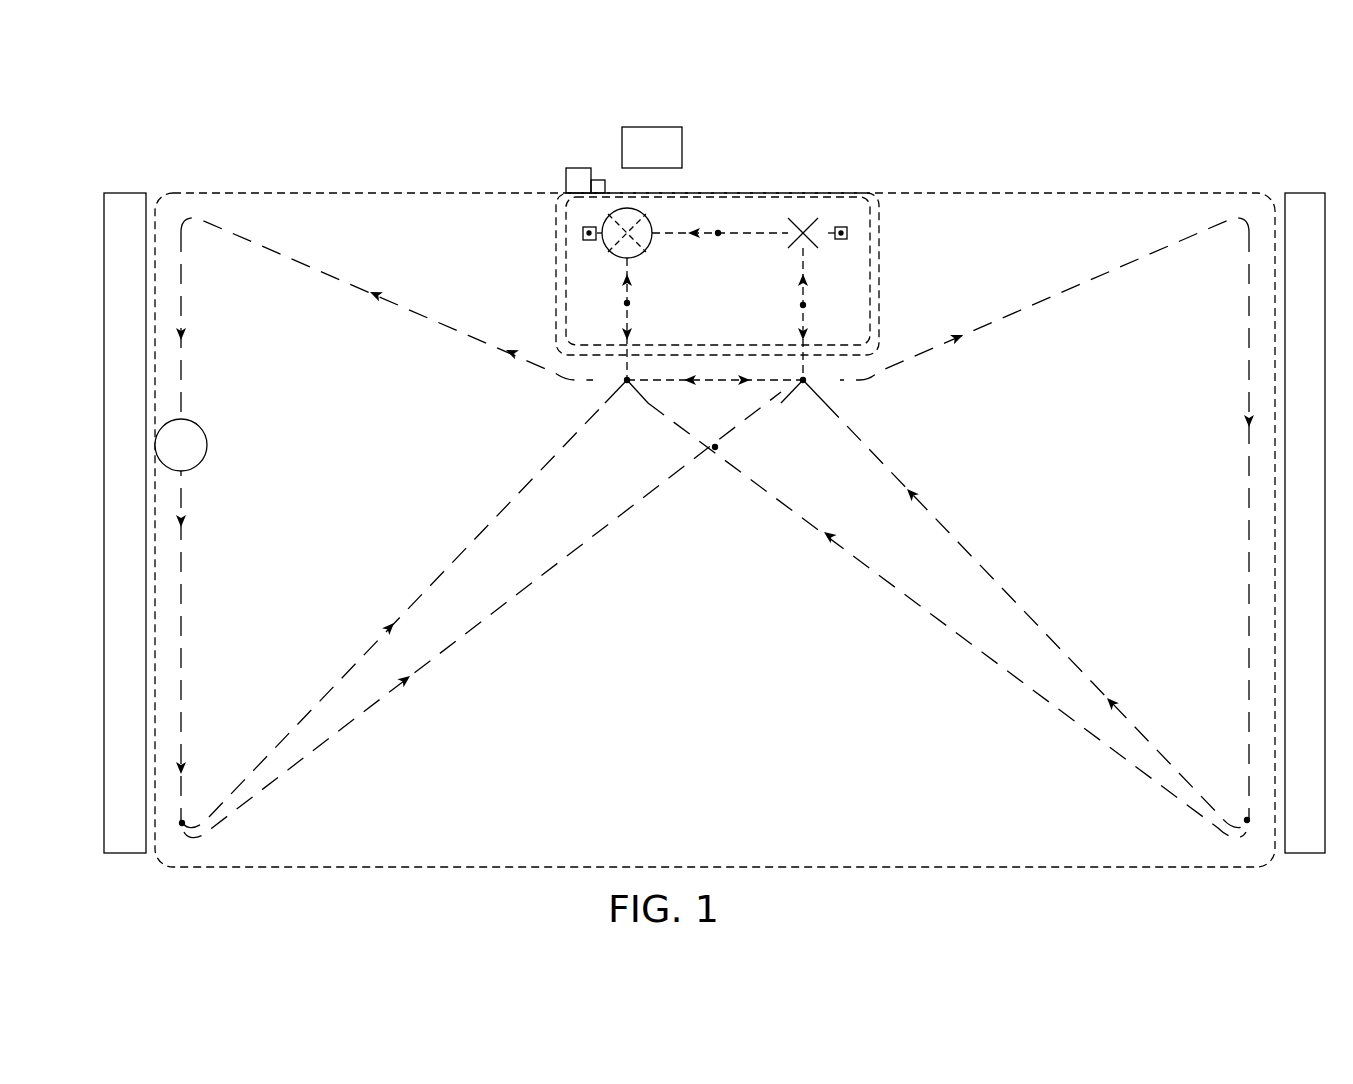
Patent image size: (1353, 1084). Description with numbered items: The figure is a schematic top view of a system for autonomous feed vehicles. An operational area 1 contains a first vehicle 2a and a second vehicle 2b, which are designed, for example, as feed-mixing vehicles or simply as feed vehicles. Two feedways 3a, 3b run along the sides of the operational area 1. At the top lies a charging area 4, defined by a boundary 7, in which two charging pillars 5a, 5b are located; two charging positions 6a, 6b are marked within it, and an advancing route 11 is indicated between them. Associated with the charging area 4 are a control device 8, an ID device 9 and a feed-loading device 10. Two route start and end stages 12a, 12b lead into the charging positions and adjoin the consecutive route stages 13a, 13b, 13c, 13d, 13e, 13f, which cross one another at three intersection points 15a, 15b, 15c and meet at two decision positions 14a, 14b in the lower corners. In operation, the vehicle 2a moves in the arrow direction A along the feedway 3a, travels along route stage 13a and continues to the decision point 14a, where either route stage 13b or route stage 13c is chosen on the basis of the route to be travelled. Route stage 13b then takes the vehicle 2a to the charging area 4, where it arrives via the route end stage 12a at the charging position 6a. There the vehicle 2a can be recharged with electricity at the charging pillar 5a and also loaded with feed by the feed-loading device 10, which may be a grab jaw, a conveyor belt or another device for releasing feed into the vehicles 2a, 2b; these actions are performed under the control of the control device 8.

The operational area 1 is at (728, 784).
The first vehicle 2a is at (206, 445).
The second vehicle 2b is at (610, 252).
The feedway 3a is at (125, 193).
The feedway 3b is at (1305, 193).
The charging area 4 is at (726, 338).
The charging pillar 5a is at (583, 233).
The charging pillar 5b is at (841, 239).
The charging position 6a is at (628, 233).
The charging position 6b is at (806, 233).
The boundary 7 is at (870, 282).
The control device 8 is at (566, 180).
The ID device 9 is at (598, 180).
The feed-loading device 10 is at (682, 148).
The advancing route 11 is at (718, 233).
The route start and end stage 12a is at (627, 303).
The route start and end stage 12b is at (803, 305).
The route stage 13a is at (303, 262).
The route stage 13b is at (447, 570).
The route stage 13c is at (485, 620).
The route stage 13d is at (1068, 289).
The route stage 13e is at (1045, 635).
The route stage 13f is at (947, 622).
The decision position 14a is at (182, 824).
The decision position 14b is at (1247, 820).
The intersection point 15a is at (715, 448).
The intersection point 15b is at (620, 383).
The intersection point 15c is at (806, 382).
The arrow direction A is at (211, 545).